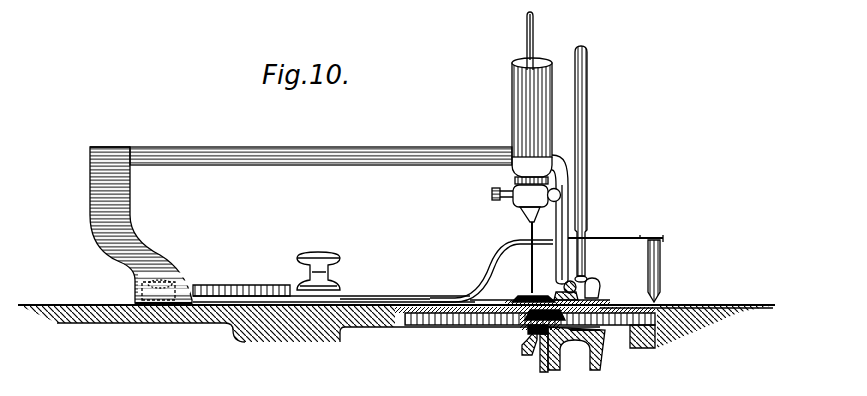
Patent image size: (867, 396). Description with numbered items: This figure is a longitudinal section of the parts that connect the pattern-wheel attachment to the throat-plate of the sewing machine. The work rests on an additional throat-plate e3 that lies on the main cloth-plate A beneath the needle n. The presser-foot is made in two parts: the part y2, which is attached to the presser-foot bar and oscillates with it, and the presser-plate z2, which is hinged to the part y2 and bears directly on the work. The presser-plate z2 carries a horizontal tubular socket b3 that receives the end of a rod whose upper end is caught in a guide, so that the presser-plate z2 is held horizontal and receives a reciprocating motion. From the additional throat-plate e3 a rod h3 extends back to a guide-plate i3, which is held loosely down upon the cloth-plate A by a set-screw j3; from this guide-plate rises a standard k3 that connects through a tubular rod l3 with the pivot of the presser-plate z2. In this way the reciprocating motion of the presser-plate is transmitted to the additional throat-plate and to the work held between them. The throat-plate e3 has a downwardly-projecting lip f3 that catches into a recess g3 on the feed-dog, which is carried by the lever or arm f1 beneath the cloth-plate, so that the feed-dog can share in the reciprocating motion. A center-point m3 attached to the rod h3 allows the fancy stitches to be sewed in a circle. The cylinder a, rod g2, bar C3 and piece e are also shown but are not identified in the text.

The cloth-plate A is at (292, 336).
The standard k3 is at (131, 213).
The tubular rod l3 is at (330, 147).
The set-screw j3 is at (140, 293).
The guide-plate i3 is at (222, 303).
The rod h3 is at (470, 297).
The cylinder a is at (528, 104).
The rod g2 is at (536, 52).
The needle n is at (531, 274).
The presser bar C3 is at (588, 194).
The horizontal tubular socket b3 is at (565, 282).
The presser-plate z2 is at (556, 296).
The presser-foot part y2 is at (600, 282).
The additional throat-plate e3 is at (605, 305).
The center-point m3 is at (660, 277).
The lever or arm f1 is at (565, 344).
The downwardly-projecting lip f3 is at (540, 330).
The cam piece e is at (545, 336).
The recess g3 is at (548, 345).